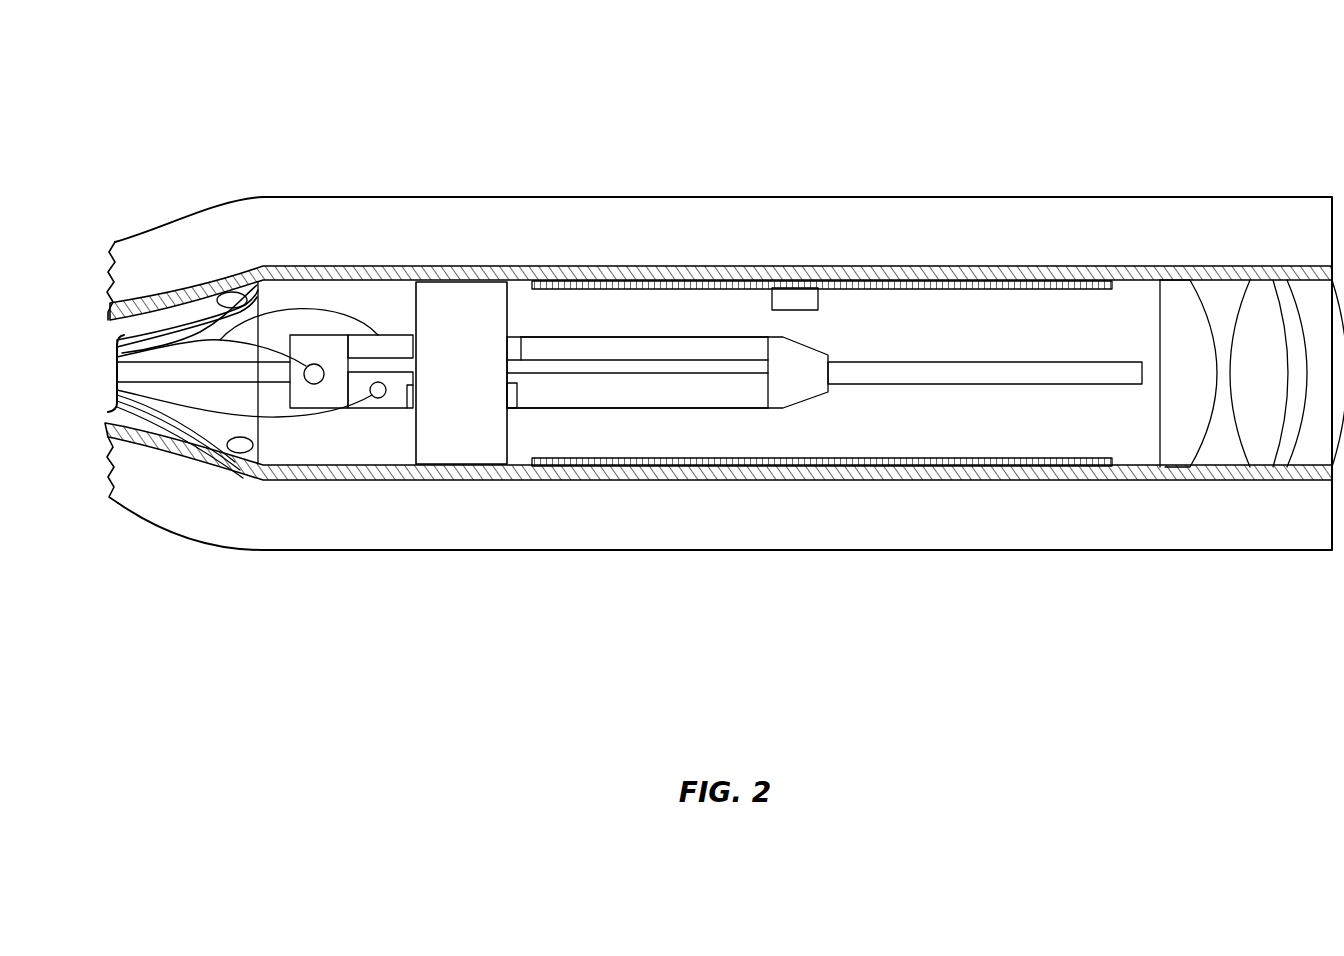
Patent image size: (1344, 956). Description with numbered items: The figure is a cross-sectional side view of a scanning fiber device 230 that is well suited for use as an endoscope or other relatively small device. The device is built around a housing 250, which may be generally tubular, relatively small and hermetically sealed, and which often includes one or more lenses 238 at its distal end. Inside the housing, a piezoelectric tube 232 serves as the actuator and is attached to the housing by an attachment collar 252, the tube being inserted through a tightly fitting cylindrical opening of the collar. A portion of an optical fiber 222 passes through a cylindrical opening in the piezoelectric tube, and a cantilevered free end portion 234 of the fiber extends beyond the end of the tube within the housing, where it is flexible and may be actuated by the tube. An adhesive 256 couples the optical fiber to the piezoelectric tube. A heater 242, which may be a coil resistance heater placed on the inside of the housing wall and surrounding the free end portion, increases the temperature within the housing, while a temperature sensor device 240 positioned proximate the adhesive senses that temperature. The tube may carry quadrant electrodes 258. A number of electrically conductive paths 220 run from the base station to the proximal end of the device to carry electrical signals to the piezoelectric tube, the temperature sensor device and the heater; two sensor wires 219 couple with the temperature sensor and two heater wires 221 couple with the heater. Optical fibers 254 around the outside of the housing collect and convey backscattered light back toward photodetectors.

The scanning fiber device 230 is at (233, 103).
The sensor wires 219 is at (196, 292).
The housing 250 is at (360, 268).
The attachment collar 252 is at (468, 282).
The piezoelectric tube 232 is at (583, 323).
The heater 242 is at (742, 582).
The temperature sensor device 240 is at (818, 302).
The optical fibers 254 is at (1105, 197).
The lenses 238 is at (1203, 262).
The electrodes 258 is at (694, 336).
The adhesive 256 is at (806, 400).
The free end portion 234 is at (1013, 397).
The optical fiber 222 is at (232, 388).
The heater wires 221 is at (190, 450).
The electrically conductive paths 220 is at (90, 408).